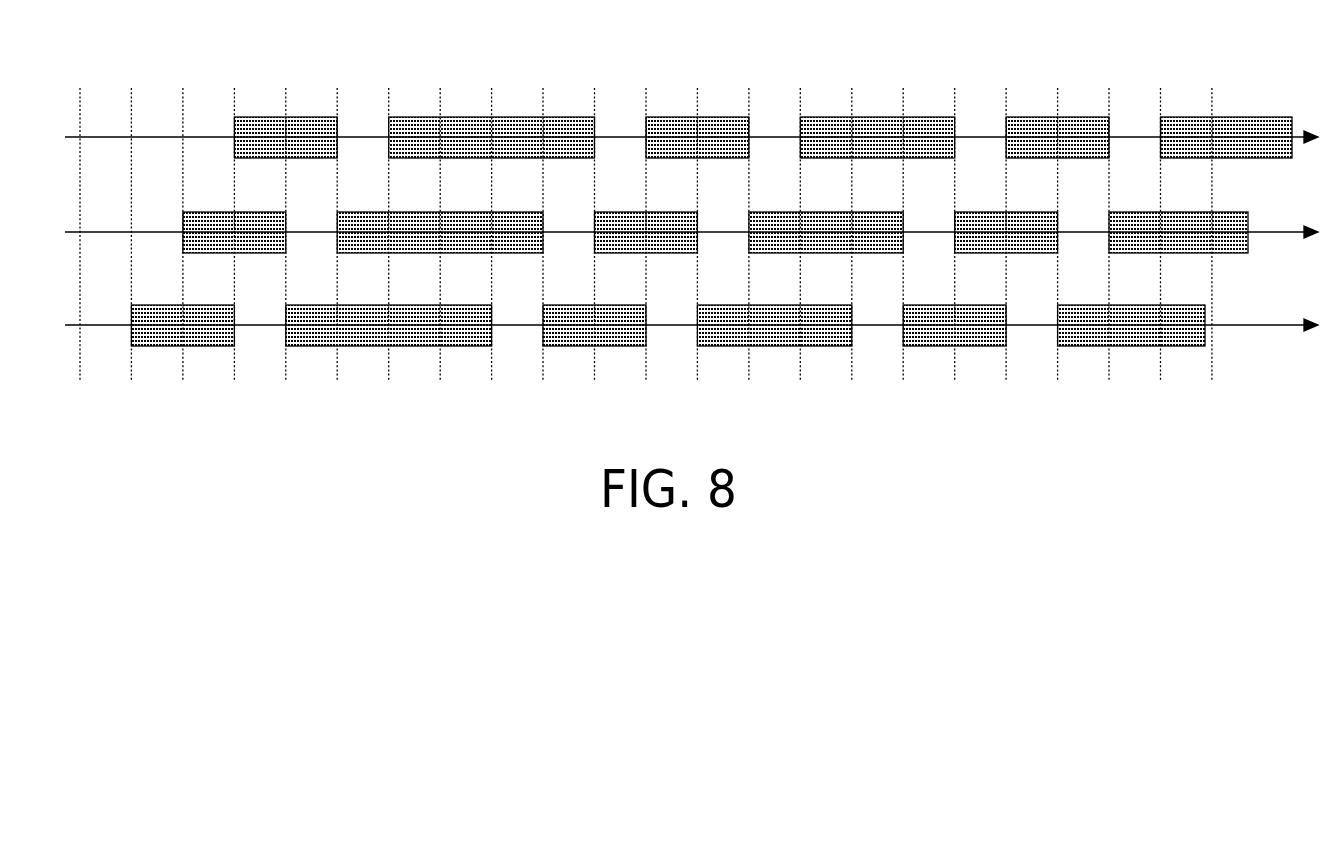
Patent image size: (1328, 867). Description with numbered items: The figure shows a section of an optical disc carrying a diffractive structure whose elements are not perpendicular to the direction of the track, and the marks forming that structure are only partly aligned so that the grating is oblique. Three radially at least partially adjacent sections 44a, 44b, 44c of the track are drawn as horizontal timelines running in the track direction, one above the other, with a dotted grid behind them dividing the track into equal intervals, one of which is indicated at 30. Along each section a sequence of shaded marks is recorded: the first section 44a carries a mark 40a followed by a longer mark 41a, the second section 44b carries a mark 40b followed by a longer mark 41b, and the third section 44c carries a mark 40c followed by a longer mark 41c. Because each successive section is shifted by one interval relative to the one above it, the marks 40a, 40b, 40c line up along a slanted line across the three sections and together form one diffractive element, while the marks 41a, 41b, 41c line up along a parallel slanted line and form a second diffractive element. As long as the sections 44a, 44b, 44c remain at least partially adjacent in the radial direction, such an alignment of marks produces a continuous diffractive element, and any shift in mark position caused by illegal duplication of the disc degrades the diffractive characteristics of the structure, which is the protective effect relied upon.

The time interval (frame period) 30 is at (157, 395).
The mark 40a is at (234, 127).
The mark 41a is at (389, 127).
The mark 40b is at (183, 222).
The mark 41b is at (338, 222).
The mark 40c is at (132, 315).
The mark 41c is at (286, 315).
The section of the track 44a is at (55, 152).
The section of the track 44b is at (55, 247).
The section of the track 44c is at (57, 340).